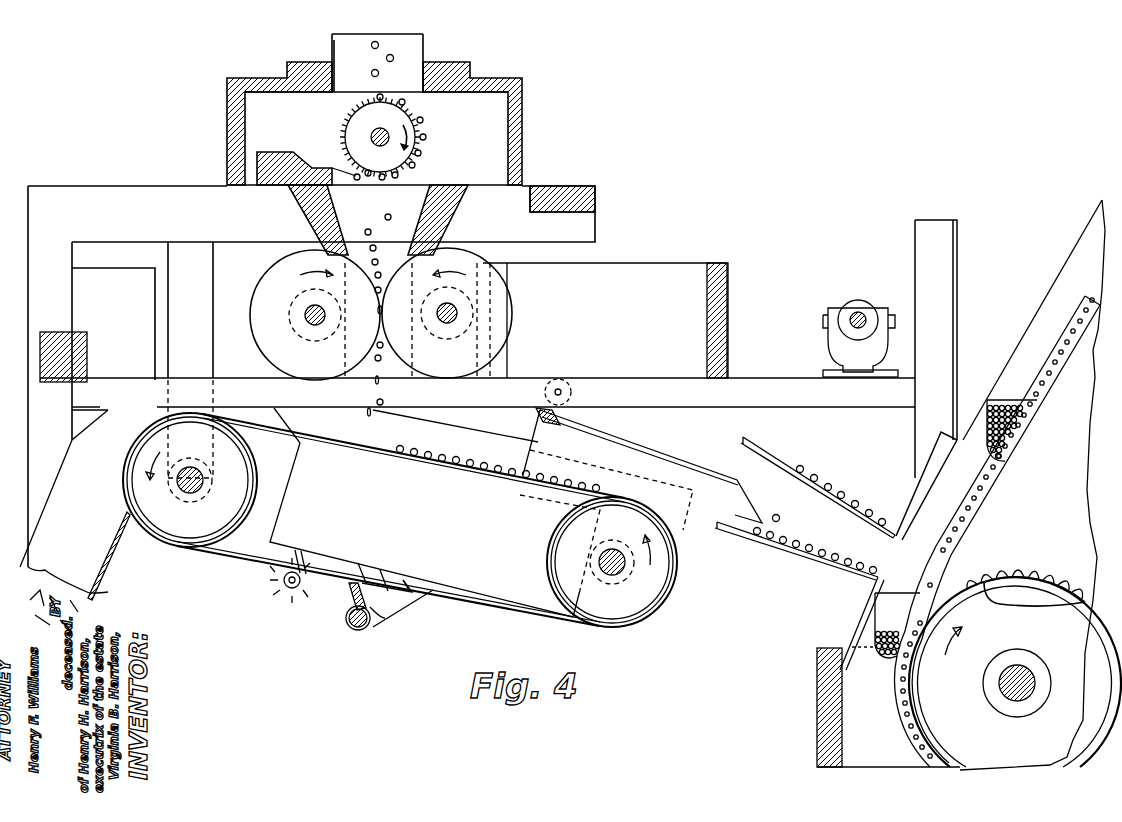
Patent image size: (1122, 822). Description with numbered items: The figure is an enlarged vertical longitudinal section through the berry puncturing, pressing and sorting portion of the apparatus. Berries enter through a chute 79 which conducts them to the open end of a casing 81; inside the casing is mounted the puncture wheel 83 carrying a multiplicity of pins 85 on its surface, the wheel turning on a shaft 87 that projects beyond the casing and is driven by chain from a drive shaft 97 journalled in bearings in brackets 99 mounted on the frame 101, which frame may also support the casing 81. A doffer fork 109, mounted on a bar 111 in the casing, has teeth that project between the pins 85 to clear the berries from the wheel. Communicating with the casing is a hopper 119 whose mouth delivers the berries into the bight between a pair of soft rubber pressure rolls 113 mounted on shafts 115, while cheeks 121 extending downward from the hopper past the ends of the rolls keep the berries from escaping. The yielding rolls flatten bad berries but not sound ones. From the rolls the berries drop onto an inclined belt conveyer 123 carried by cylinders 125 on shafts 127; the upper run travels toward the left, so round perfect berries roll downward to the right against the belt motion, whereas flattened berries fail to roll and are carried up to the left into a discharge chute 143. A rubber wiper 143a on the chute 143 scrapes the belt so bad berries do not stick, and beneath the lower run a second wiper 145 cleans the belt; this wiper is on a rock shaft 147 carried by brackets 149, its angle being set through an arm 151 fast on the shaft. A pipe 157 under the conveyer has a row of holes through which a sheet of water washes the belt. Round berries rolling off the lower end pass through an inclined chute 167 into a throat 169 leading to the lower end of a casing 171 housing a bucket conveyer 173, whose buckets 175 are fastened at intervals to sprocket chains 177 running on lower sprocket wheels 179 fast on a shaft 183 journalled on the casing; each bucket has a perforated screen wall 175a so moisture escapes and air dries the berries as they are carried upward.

The chute 79 is at (424, 40).
The casing 81 is at (515, 135).
The puncture wheel 83 is at (386, 132).
The pins 85 is at (420, 158).
The shaft 87 is at (380, 137).
The drive shaft 97 is at (852, 313).
The brackets 99 is at (835, 342).
The frame 101 is at (168, 196).
The doffer fork 109 is at (335, 178).
The bar 111 is at (298, 156).
The rolls 113 is at (295, 270).
The shafts 115 is at (315, 315).
The hopper 119 is at (438, 223).
The cheeks 121 is at (388, 364).
The conveyer 123 is at (398, 452).
The cylinders 125 is at (250, 488).
The shafts 127 is at (202, 486).
The discharge chute 143 is at (93, 597).
The wiper 143a is at (127, 515).
The wiper 145 is at (350, 596).
The rock shaft 147 is at (347, 625).
The brackets 149 is at (386, 621).
The arm 151 is at (405, 600).
The pipe 157 is at (284, 590).
The chute 167 is at (640, 456).
The throat 169 is at (805, 478).
The casing 171 is at (943, 458).
The bucket conveyer 173 is at (1060, 358).
The buckets 175 is at (985, 452).
The perforated wall 175a is at (875, 616).
The sprocket chains 177 is at (984, 494).
The lower sprocket wheels 179 is at (1020, 578).
The shaft 183 is at (1024, 674).